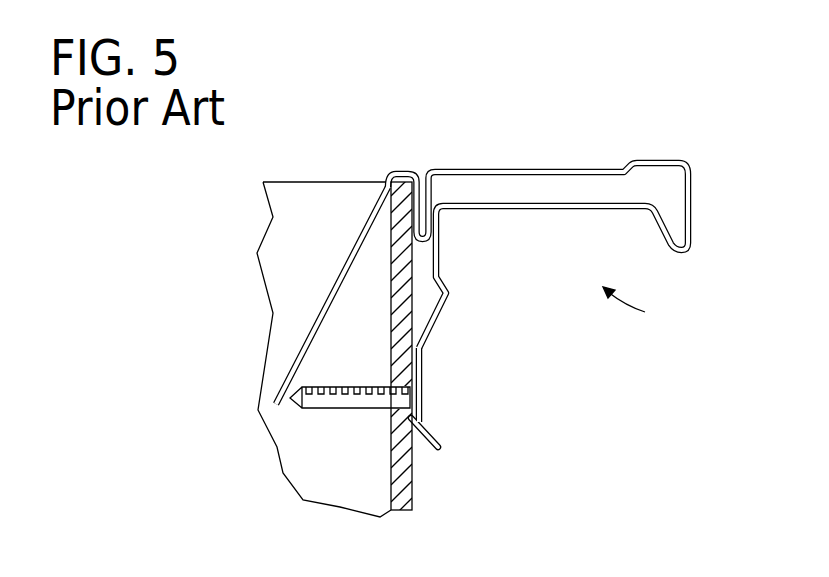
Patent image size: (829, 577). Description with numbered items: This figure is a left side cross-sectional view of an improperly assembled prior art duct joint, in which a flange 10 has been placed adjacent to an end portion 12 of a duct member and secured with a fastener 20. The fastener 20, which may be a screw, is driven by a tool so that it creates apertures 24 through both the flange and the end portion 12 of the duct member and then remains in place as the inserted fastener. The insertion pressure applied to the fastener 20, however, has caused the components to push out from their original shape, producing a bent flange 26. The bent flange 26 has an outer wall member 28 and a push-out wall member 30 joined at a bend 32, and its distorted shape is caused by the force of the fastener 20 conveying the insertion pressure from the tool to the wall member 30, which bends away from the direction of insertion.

The flange 10 is at (642, 314).
The end portion 12 is at (399, 504).
The fastener 20 is at (323, 410).
The apertures 24 is at (392, 387).
The bent flange 26 is at (517, 145).
The outer wall member 28 is at (421, 372).
The push-out wall member 30 is at (313, 322).
The bend 32 is at (400, 170).